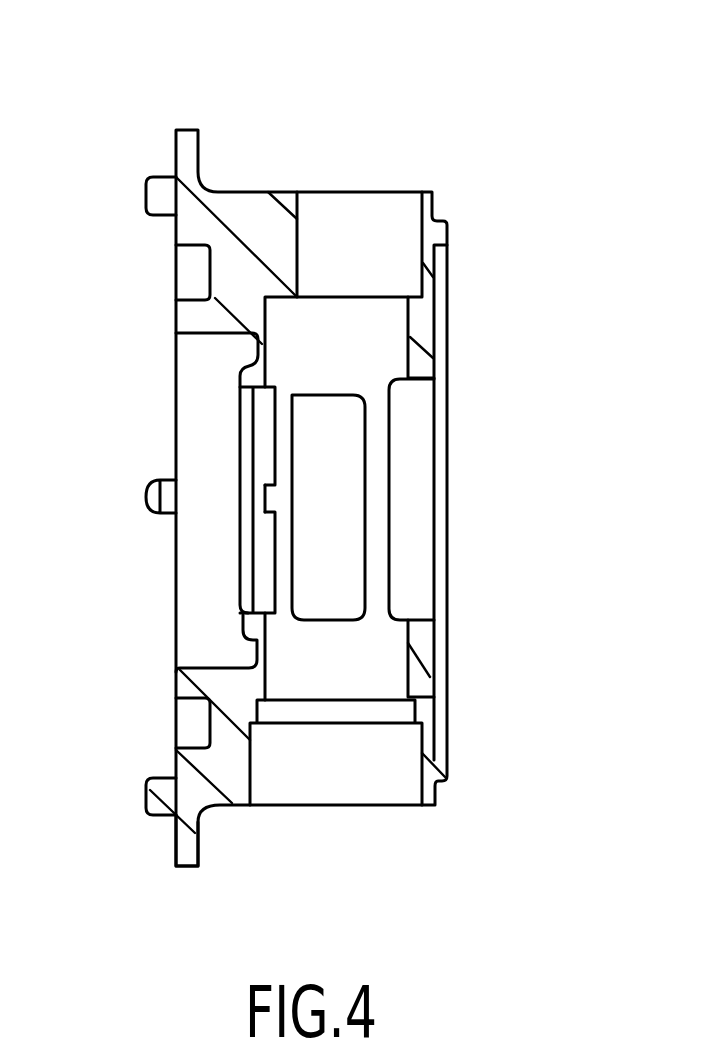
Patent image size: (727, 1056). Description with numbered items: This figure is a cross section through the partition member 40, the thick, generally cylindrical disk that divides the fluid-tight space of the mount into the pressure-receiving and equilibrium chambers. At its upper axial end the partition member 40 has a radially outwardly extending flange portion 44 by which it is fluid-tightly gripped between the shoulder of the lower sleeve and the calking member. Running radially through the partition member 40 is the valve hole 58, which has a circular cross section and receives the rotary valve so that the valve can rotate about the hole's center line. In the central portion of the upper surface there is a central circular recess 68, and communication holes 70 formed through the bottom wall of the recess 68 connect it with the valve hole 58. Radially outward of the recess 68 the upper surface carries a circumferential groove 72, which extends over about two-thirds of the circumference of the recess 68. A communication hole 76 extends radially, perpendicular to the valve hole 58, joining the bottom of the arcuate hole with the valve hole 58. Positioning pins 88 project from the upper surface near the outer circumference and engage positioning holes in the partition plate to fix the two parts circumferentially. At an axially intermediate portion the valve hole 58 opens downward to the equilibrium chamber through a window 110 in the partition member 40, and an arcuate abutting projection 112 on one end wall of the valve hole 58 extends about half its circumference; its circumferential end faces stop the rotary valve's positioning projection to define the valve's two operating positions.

The partition member 40 is at (545, 150).
The flange portion 44 is at (172, 845).
The valve hole 58 is at (405, 670).
The central circular recess 68 is at (208, 667).
The communication holes 70 is at (255, 388).
The circumferential groove 72 is at (197, 248).
The communication hole 76 is at (367, 410).
The positioning pins 88 is at (166, 190).
The window 110 is at (428, 620).
The arcuate abutting projection 112 is at (272, 297).